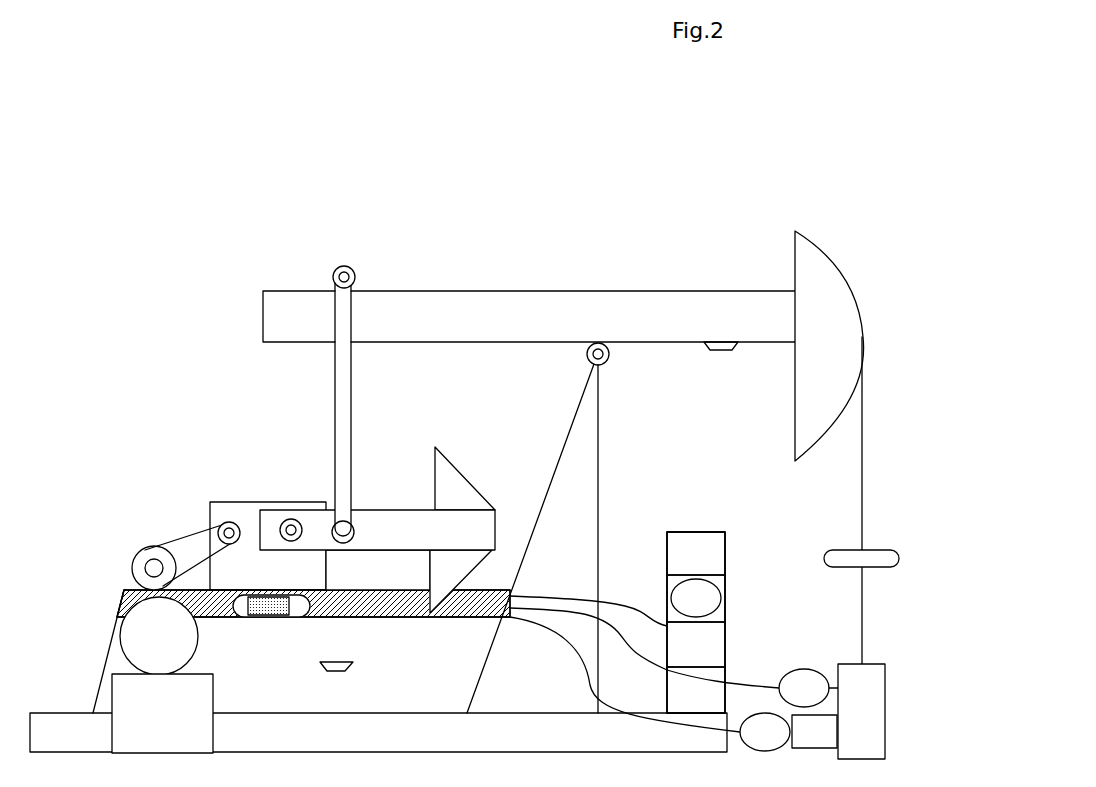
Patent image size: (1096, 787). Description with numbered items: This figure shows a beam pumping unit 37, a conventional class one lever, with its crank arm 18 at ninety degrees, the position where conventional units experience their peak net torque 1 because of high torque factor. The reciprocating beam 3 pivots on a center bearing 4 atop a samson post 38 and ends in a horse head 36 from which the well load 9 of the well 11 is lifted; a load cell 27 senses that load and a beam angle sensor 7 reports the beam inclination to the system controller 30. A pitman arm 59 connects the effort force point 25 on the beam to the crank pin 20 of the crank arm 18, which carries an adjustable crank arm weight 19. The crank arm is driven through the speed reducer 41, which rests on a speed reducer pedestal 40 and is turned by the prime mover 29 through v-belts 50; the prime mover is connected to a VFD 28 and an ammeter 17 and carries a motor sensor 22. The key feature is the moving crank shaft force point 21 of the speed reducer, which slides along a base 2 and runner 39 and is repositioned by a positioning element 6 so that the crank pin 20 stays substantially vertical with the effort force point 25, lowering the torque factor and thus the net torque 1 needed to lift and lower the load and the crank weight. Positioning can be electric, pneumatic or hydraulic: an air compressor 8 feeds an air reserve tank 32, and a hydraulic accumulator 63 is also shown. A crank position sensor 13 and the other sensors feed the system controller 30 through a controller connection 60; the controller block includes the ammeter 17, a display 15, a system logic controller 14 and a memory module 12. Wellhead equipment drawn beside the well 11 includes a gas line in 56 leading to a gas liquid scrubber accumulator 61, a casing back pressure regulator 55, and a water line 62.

The net torque 1 is at (336, 568).
The slide rail 2 is at (386, 618).
The beam 3 is at (274, 318).
The center bearing 4 is at (586, 357).
The positioning element 6 is at (272, 613).
The beam angle sensor 7 is at (712, 357).
The air compressor 8 is at (155, 719).
The well load 9 is at (883, 512).
The well 11 is at (874, 746).
The memory module 12 is at (725, 615).
The crank position sensor 13 is at (333, 662).
The system logic controller 14 is at (704, 656).
The display 15 is at (708, 609).
The ammeter 17 is at (704, 564).
The crank arm 18 is at (419, 543).
The crank arm weight 19 is at (452, 485).
The crank pin 20 is at (350, 525).
The moving crank shaft force point 21 is at (289, 519).
The motor sensor 22 is at (158, 568).
The effort force point 25 is at (356, 277).
The load cell 27 is at (892, 558).
The VFD 28 is at (704, 702).
The prime mover 29 is at (137, 567).
The system controller 30 is at (686, 521).
The air reserve tank 32 is at (171, 647).
The horse head 36 is at (835, 308).
The beam pumping unit 37 is at (602, 269).
The samson post 38 is at (588, 446).
The runner 39 is at (633, 744).
The speed reducer pedestal 40 is at (115, 658).
The speed reducer 41 is at (230, 507).
The v-belts 50 is at (187, 540).
The casing back pressure regulator 55 is at (827, 743).
The gas line in 56 is at (568, 643).
The pitman arm 59 is at (343, 376).
The controller connection 60 is at (623, 617).
The gas liquid scrubber accumulator 61 is at (777, 743).
The water line 62 is at (652, 668).
The hydraulic accumulator 63 is at (816, 699).